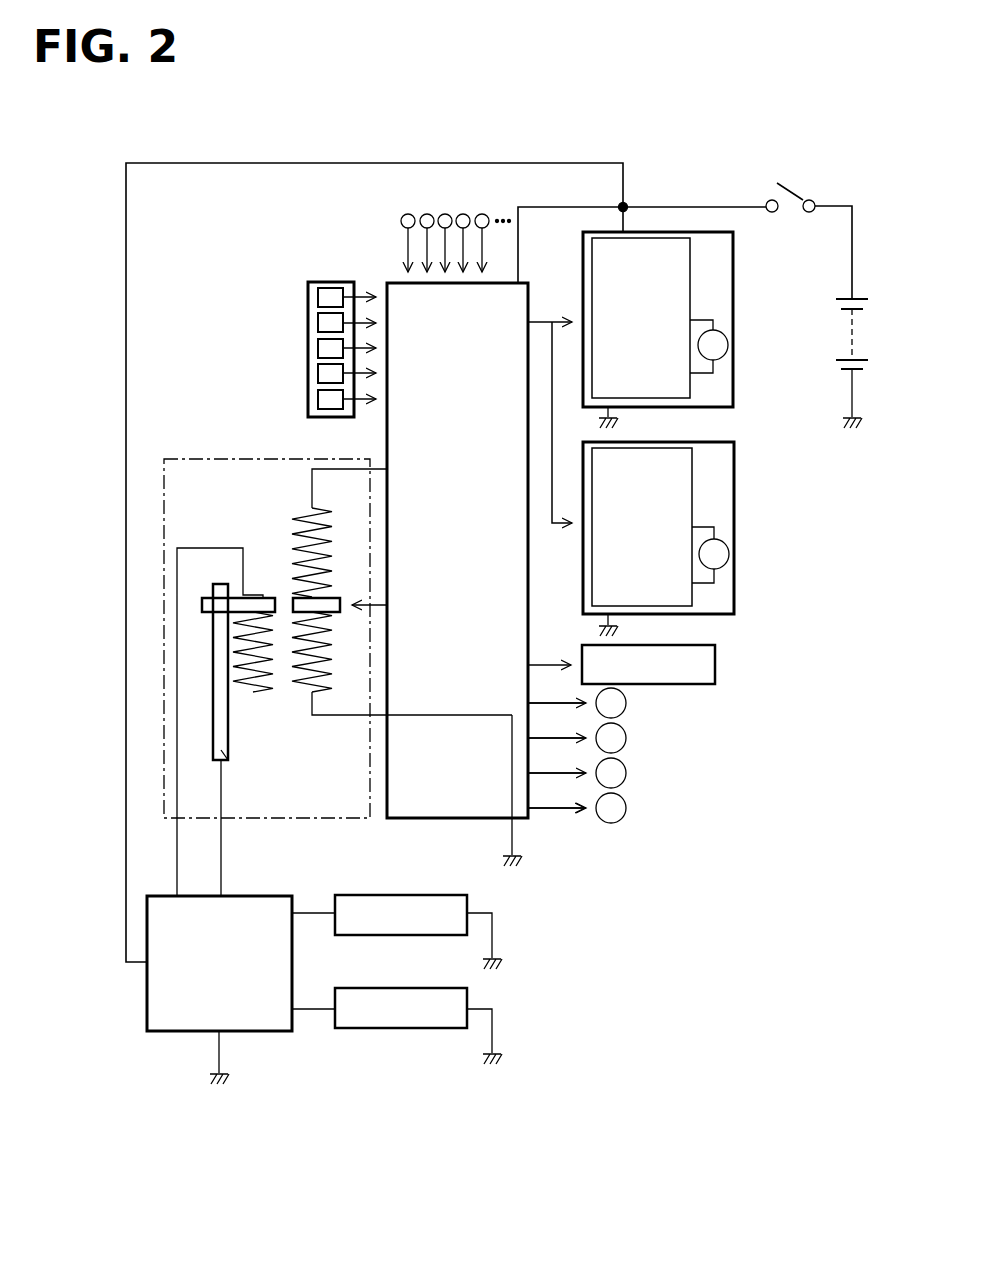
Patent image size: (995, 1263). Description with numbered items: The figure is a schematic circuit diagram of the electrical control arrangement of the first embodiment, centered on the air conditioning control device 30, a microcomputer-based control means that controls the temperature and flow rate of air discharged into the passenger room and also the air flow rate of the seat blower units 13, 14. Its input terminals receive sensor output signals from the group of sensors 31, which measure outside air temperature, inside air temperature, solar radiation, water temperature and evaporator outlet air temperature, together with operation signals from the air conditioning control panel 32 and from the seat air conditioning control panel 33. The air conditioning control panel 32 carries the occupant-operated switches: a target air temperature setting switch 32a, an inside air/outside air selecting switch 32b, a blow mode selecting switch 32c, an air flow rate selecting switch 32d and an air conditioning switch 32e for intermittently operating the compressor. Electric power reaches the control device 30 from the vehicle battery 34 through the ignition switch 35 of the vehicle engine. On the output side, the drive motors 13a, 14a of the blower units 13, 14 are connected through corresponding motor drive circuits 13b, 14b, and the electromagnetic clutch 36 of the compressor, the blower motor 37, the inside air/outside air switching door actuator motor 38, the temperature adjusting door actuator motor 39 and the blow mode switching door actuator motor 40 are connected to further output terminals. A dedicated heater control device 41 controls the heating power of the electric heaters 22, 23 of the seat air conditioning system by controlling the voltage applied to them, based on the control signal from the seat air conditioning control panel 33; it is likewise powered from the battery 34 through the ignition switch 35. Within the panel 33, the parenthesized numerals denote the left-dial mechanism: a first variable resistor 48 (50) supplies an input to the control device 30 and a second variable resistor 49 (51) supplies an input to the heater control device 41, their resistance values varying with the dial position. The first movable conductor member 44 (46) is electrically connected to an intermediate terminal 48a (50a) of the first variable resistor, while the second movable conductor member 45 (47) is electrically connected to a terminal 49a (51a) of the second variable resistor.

The blower unit 13 is at (697, 330).
The drive motor 13a is at (722, 358).
The motor drive circuit 13b is at (692, 252).
The blower unit 14 is at (697, 539).
The drive motor 14a is at (724, 566).
The motor drive circuit 14b is at (692, 460).
The electric heater 22 is at (393, 895).
The electric heater 23 is at (393, 988).
The air conditioning control device 30 is at (385, 276).
The group of sensors 31 is at (510, 210).
The air conditioning control panel 32 is at (330, 281).
The target air temperature setting switch 32a is at (318, 296).
The inside air/outside air selecting switch 32b is at (318, 322).
The blow mode selecting switch 32c is at (318, 347).
The air flow rate selecting switch 32d is at (318, 372).
The air conditioning switch 32e is at (318, 398).
The seat air conditioning control panel 33 is at (186, 457).
The vehicle battery 34 is at (842, 338).
The ignition switch 35 is at (772, 185).
The electromagnetic clutch 36 is at (715, 665).
The blower motor 37 is at (626, 703).
The inside air/outside air switching door actuator motor 38 is at (626, 738).
The temperature adjusting door actuator motor 39 is at (626, 773).
The blow mode switching door actuator motor 40 is at (626, 808).
The heater control device 41 is at (250, 1031).
The first movable conductor member 44 is at (277, 597).
The second movable conductor member 45 is at (200, 605).
The first movable conductor member 46 is at (153, 691).
The second movable conductor member 47 is at (152, 740).
The first variable resistor 48 is at (287, 533).
The intermediate terminal 48a is at (378, 602).
The second variable resistor 49 is at (262, 690).
The terminal 49a is at (230, 756).
The first variable resistor 50 is at (339, 558).
The intermediate terminal 50a is at (316, 515).
The second variable resistor 51 is at (309, 732).
The terminal 51a is at (277, 816).